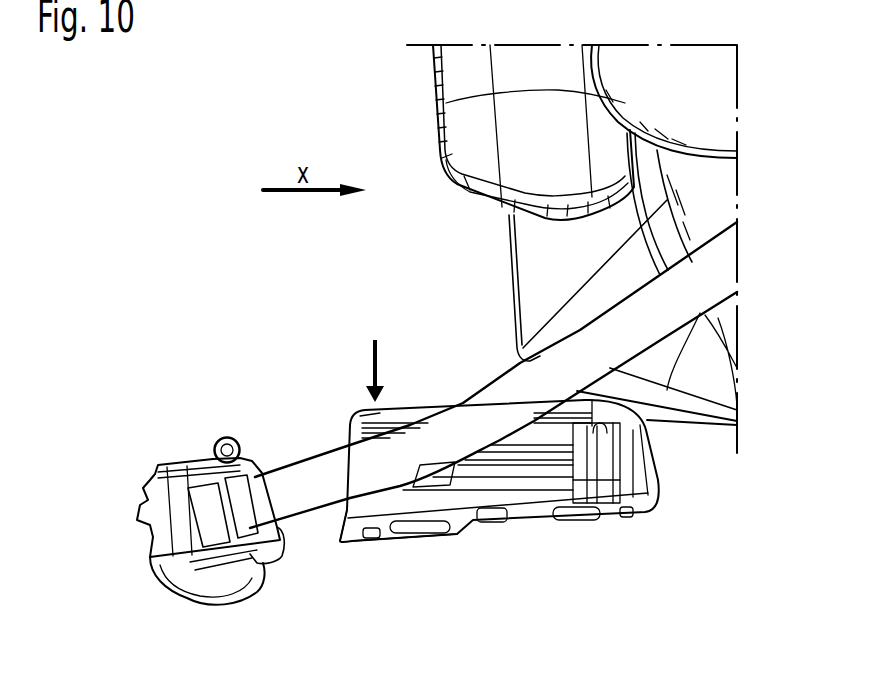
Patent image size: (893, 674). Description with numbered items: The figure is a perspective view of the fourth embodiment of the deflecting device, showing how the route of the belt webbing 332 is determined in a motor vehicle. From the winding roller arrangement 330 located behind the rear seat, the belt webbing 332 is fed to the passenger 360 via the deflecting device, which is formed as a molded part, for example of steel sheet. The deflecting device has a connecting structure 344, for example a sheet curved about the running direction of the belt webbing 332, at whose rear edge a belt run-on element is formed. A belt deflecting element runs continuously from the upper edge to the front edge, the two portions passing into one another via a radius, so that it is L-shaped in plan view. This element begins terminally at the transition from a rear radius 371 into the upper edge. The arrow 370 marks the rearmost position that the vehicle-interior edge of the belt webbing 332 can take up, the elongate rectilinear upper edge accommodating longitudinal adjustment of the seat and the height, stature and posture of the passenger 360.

The passenger 360 is at (703, 107).
The arrow 370 is at (378, 358).
The rear radius 371 is at (352, 418).
The belt webbing 332 is at (295, 474).
The winding roller arrangement 330 is at (150, 547).
The connecting structure 344 is at (510, 473).